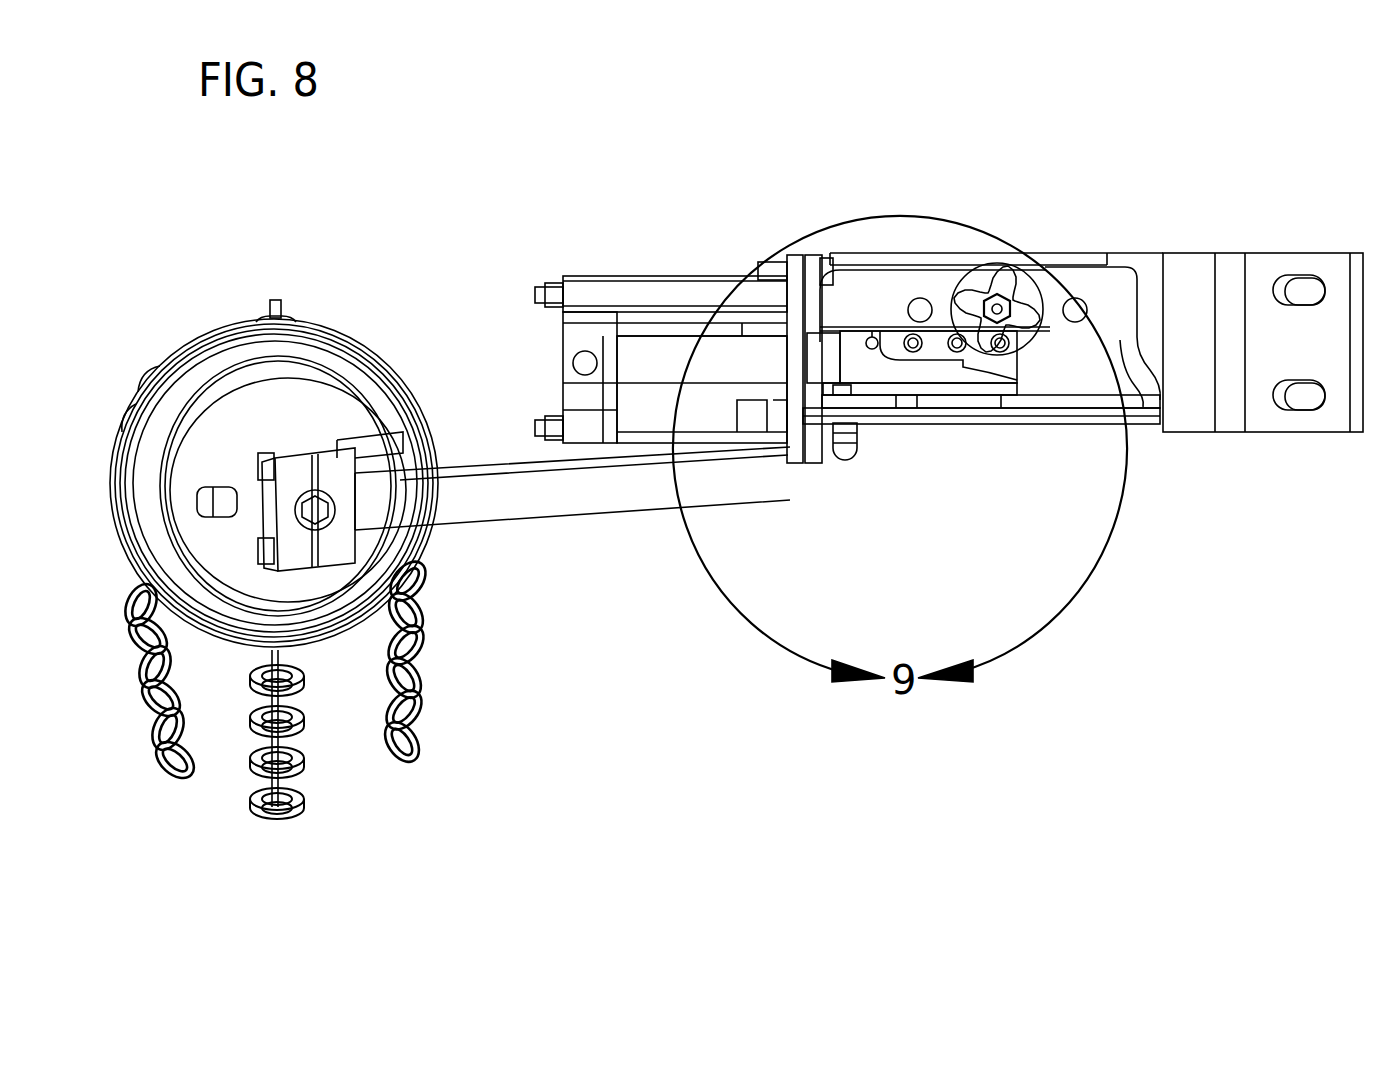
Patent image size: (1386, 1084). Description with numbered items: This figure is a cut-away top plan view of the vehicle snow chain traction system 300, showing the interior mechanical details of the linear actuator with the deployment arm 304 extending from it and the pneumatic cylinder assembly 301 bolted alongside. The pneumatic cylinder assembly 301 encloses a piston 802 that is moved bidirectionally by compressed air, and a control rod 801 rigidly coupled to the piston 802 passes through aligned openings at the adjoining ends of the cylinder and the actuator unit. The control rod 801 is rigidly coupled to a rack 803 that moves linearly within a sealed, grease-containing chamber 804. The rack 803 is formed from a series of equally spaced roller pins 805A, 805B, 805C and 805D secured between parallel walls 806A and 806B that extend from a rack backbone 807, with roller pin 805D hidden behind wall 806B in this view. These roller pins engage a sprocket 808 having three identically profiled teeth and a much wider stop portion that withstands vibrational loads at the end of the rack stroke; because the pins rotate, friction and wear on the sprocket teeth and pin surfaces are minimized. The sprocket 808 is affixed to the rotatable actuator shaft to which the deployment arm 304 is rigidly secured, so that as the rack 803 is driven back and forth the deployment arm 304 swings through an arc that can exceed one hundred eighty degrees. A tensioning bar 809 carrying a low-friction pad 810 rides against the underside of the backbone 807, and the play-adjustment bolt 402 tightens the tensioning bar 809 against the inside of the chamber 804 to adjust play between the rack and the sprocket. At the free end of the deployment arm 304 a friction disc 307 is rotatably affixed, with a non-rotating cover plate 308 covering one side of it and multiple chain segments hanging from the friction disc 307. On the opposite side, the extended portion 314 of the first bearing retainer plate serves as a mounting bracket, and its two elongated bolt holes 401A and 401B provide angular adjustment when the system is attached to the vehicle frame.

The vehicle snow chain traction system 300 is at (372, 212).
The pneumatic cylinder assembly 301 is at (668, 290).
The deployment arm 304 is at (558, 497).
The friction disc 307 is at (190, 363).
The non-rotating cover plate 308 is at (248, 420).
The extended portion (mounting bracket) 314 is at (1338, 400).
The elongated bolt hole 401A is at (1302, 410).
The elongated bolt hole 401B is at (1302, 272).
The play-adjustment bolt 402 is at (877, 422).
The control rod 801 is at (712, 365).
The piston 802 is at (625, 335).
The rack 803 is at (896, 386).
The chamber 804 is at (1054, 412).
The roller pin 805A is at (1042, 268).
The roller pin 805B is at (953, 333).
The roller pin 805C is at (911, 333).
The roller pin 805D is at (868, 336).
The parallel wall 806A is at (949, 378).
The parallel wall 806B is at (853, 355).
The rack backbone 807 is at (937, 350).
The sprocket 808 is at (1008, 272).
The tensioning bar 809 is at (917, 407).
The low-friction pad 810 is at (1001, 397).